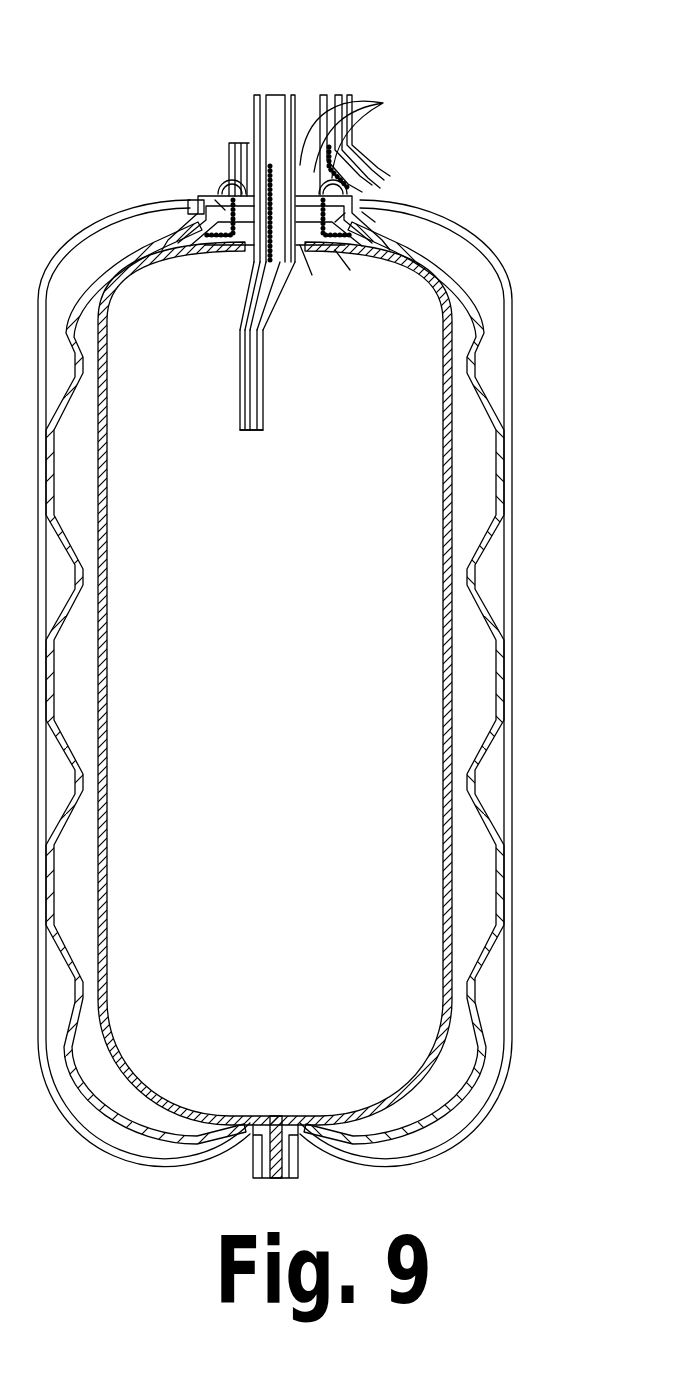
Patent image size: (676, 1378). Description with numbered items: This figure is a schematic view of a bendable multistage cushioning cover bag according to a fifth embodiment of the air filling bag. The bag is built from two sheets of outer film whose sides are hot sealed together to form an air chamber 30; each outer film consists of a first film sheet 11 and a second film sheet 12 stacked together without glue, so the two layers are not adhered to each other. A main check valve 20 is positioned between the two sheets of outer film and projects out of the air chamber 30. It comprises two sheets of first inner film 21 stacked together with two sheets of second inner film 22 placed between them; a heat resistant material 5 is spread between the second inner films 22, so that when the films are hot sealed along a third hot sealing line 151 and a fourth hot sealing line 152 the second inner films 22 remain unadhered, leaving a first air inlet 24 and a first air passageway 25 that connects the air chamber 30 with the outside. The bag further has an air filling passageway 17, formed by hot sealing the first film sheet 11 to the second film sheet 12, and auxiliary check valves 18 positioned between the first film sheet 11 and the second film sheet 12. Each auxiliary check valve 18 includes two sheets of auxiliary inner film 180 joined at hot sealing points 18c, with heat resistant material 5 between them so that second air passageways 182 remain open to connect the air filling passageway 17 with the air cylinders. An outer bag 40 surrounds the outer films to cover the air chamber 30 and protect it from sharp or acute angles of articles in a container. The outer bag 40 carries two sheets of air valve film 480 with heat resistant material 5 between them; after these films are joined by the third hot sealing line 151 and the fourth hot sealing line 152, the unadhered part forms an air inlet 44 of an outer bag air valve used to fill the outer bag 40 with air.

The main check valve 20 is at (319, 248).
The first air inlet 24 is at (277, 116).
The air inlet of an outer bag air valve 44 is at (330, 86).
The fourth hot sealing line 152 is at (362, 132).
The air filling passageway 17 is at (232, 174).
The hot sealing points 18c is at (220, 208).
The heat resistant material 5 is at (229, 187).
The second air passageway 182 is at (195, 205).
The air valve film 480 is at (378, 212).
The auxiliary check valve 18 is at (390, 236).
The third hot sealing line 151 is at (307, 242).
The auxiliary inner film 180 is at (342, 252).
The first air passageway 25 is at (260, 291).
The first inner film 21 is at (240, 370).
The second inner film 22 is at (250, 433).
The outer bag 40 is at (512, 365).
The first film sheet 11 is at (503, 481).
The second film sheet 12 is at (445, 663).
The air chamber 30 is at (470, 720).